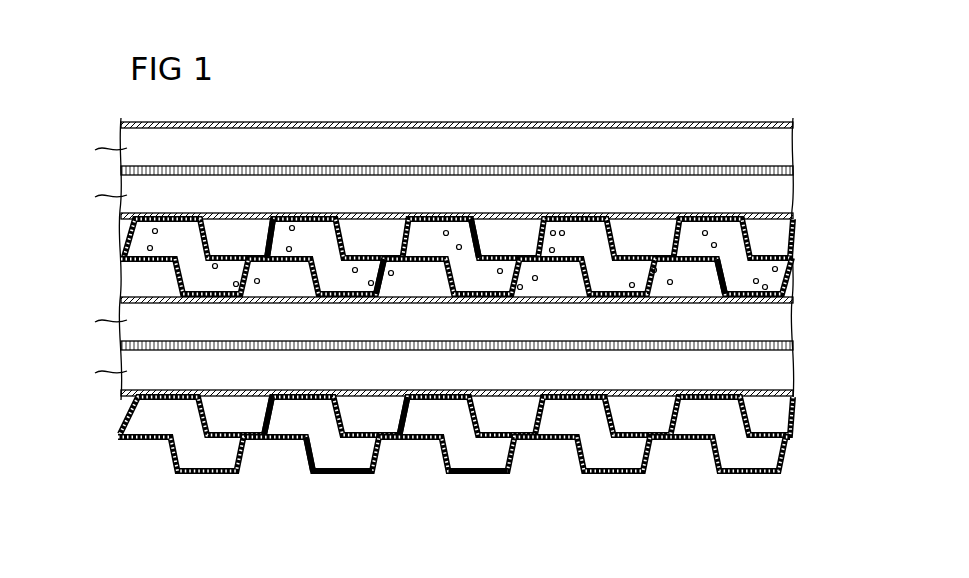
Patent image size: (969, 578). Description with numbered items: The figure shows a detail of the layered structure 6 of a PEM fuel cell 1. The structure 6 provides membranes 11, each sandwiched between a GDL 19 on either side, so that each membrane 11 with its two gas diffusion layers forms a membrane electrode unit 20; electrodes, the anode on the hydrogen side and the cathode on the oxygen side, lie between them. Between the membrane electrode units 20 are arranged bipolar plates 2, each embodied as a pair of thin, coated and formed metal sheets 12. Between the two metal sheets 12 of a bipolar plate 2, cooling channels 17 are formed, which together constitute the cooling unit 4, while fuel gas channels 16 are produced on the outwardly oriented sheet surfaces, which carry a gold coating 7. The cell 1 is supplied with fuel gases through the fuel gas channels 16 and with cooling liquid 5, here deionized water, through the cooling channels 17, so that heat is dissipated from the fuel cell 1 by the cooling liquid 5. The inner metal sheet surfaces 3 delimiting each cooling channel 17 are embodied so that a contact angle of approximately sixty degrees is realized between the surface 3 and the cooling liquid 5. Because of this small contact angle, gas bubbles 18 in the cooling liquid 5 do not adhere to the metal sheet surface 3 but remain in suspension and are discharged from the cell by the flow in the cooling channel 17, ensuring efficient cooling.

The PEM fuel cell 1 is at (751, 96).
The structure 6 is at (458, 278).
The bipolar plate 2 is at (102, 263).
The metal sheet surface 3 is at (230, 439).
The cooling unit 4 is at (149, 450).
The cooling liquid 5 is at (482, 458).
The gold coating 7 is at (478, 233).
The membrane 11 is at (783, 172).
The metal sheet 12 is at (262, 233).
The fuel gas channel 16 is at (385, 280).
The cooling channel 17 is at (350, 463).
The gas bubble 18 is at (563, 231).
The GDL 19 is at (782, 145).
The membrane electrode unit 20 is at (803, 393).